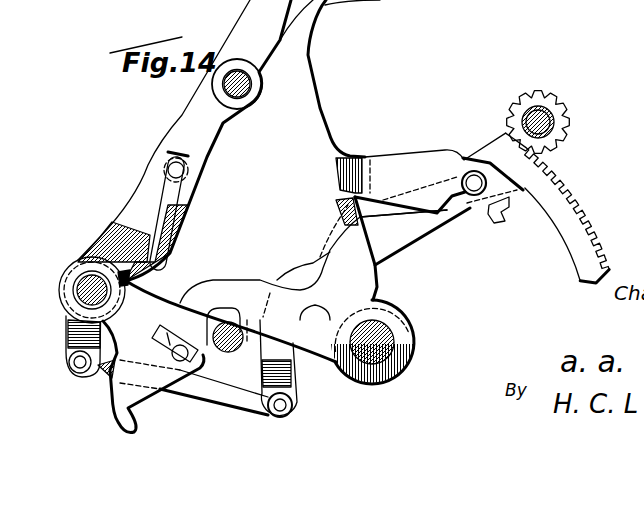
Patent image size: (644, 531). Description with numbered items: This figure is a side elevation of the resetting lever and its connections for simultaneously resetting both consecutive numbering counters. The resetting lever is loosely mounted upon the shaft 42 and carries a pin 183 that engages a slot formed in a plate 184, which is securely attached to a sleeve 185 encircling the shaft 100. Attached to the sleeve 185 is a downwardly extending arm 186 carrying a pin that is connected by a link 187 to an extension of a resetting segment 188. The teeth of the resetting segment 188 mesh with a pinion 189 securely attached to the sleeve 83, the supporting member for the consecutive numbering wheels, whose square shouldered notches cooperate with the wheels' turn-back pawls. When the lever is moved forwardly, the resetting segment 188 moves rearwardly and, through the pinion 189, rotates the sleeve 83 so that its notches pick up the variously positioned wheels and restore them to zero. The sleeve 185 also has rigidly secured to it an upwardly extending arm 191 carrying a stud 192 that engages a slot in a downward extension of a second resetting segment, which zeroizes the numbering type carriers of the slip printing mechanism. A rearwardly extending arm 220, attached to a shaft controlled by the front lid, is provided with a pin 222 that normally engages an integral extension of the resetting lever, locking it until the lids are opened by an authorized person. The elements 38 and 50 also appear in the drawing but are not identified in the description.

The pin 38 is at (213, 349).
The shaft 42 is at (388, 330).
The pinion gear 50 is at (556, 110).
The sleeve 83 is at (560, 117).
The shaft 100 is at (128, 281).
The pin 183 is at (183, 297).
The plate 184 is at (219, 356).
The sleeve 185 is at (82, 284).
The arm 186 is at (76, 335).
The link 187 is at (206, 388).
The resetting segment 188 is at (429, 216).
The pinion 189 is at (556, 142).
The arm 191 is at (100, 237).
The stud 192 is at (180, 177).
The arm 220 is at (474, 210).
The pin 222 is at (475, 180).